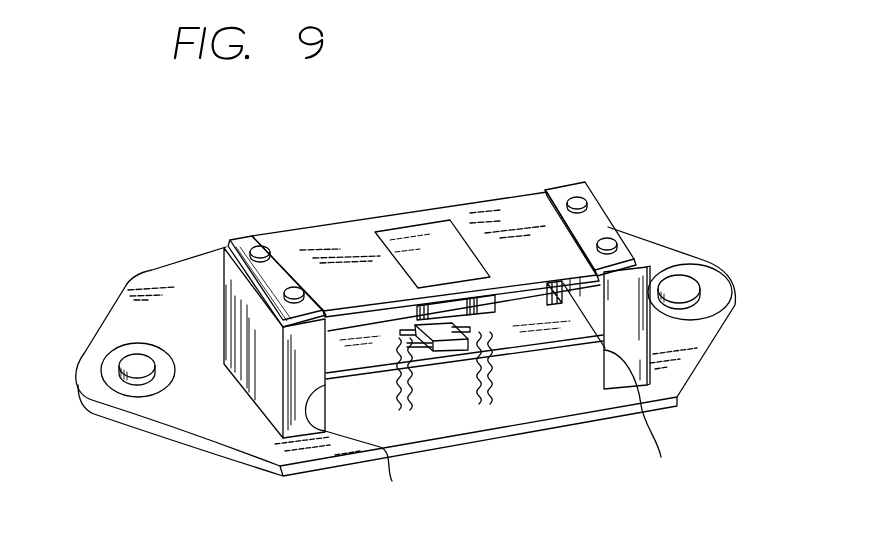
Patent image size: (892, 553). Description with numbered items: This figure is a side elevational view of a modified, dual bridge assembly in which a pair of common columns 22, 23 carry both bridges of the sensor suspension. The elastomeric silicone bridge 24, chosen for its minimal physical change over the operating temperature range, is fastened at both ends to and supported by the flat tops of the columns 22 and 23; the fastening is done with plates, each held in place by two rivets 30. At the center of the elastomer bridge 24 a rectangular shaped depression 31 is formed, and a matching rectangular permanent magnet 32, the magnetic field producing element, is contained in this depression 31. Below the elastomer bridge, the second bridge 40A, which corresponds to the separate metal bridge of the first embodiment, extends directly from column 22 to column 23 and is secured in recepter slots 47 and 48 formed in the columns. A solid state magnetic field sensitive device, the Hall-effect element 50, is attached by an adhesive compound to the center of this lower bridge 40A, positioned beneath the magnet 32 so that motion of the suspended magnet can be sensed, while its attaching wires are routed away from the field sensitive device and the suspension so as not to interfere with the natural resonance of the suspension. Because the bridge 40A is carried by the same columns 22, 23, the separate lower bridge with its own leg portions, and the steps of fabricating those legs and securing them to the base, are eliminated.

The column 22 is at (263, 375).
The column 23 is at (650, 333).
The elastomeric silicone bridge 24 is at (480, 213).
The rivets 30 is at (295, 289).
The rectangular shaped depression 31 is at (494, 306).
The rectangular permanent magnet 32 is at (420, 237).
The bridge 40A is at (505, 335).
The recepter slot 47 is at (361, 445).
The recepter slot 48 is at (616, 332).
The Hall-effect element 50 is at (443, 351).